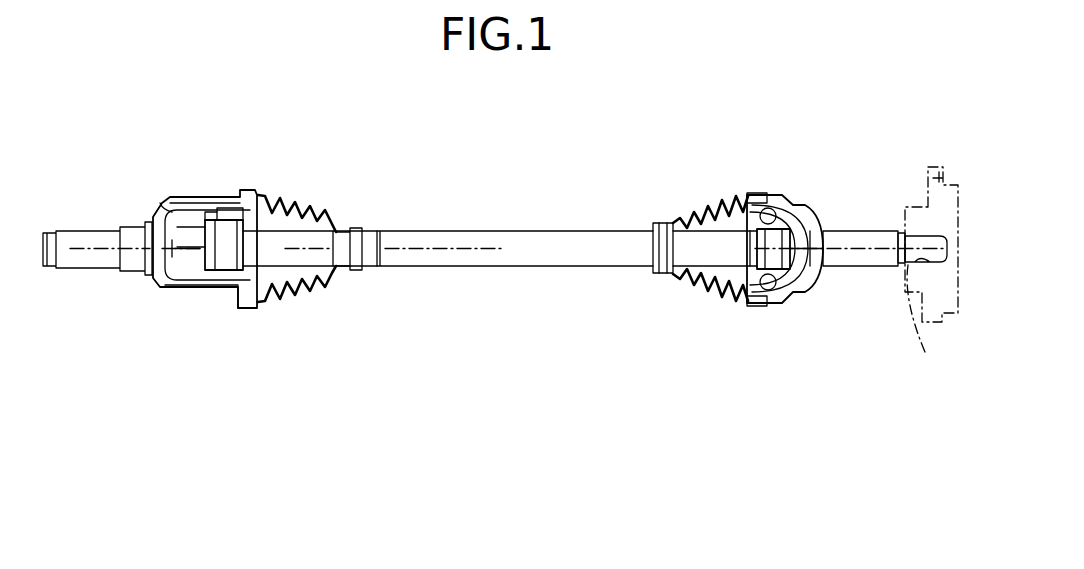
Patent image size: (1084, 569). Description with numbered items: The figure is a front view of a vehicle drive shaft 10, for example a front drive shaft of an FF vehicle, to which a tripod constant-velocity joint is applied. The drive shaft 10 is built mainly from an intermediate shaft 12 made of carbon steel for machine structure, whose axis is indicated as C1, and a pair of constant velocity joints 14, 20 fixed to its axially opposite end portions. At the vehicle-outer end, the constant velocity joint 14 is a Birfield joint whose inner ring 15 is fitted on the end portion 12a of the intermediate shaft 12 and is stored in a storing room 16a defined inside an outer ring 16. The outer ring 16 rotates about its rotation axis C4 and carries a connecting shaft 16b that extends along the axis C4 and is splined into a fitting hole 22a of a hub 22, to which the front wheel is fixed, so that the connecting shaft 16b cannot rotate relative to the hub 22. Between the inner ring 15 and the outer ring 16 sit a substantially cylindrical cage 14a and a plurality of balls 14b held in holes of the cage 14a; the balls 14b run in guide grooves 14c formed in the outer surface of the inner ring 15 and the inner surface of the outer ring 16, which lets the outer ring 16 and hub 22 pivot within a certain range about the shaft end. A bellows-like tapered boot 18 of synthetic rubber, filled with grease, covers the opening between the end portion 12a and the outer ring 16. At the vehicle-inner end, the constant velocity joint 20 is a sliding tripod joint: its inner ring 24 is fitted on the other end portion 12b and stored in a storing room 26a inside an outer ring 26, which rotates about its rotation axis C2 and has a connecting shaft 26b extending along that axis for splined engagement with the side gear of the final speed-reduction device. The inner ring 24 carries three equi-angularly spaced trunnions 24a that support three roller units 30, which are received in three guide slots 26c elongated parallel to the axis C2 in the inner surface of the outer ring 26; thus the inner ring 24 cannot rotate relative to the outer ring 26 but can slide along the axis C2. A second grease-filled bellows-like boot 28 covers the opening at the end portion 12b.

The vehicle drive shaft 10 is at (736, 128).
The intermediate shaft 12 is at (523, 215).
The end portion 12a is at (728, 237).
The end portion 12b is at (307, 243).
The constant velocity joint 14 is at (733, 266).
The cage 14a is at (780, 293).
The balls 14b is at (772, 224).
The guide grooves 14c is at (766, 208).
The inner ring 15 is at (730, 308).
The outer ring 16 is at (835, 210).
The storing room 16a is at (800, 270).
The connecting shaft 16b is at (850, 238).
The boot 18 is at (668, 283).
The constant velocity joint 20 is at (217, 258).
The hub 22 is at (933, 160).
The fitting hole 22a is at (928, 318).
The inner ring 24 is at (222, 284).
The trunnions 24a is at (227, 208).
The outer ring 26 is at (177, 273).
The storing room 26a is at (188, 262).
The connecting shaft 26b is at (103, 238).
The guide slots 26c is at (163, 207).
The boot 28 is at (320, 282).
The roller units 30 is at (198, 212).
The shaft axis C1 is at (465, 253).
The rotation axis C2 is at (100, 252).
The rotation axis C4 is at (875, 250).